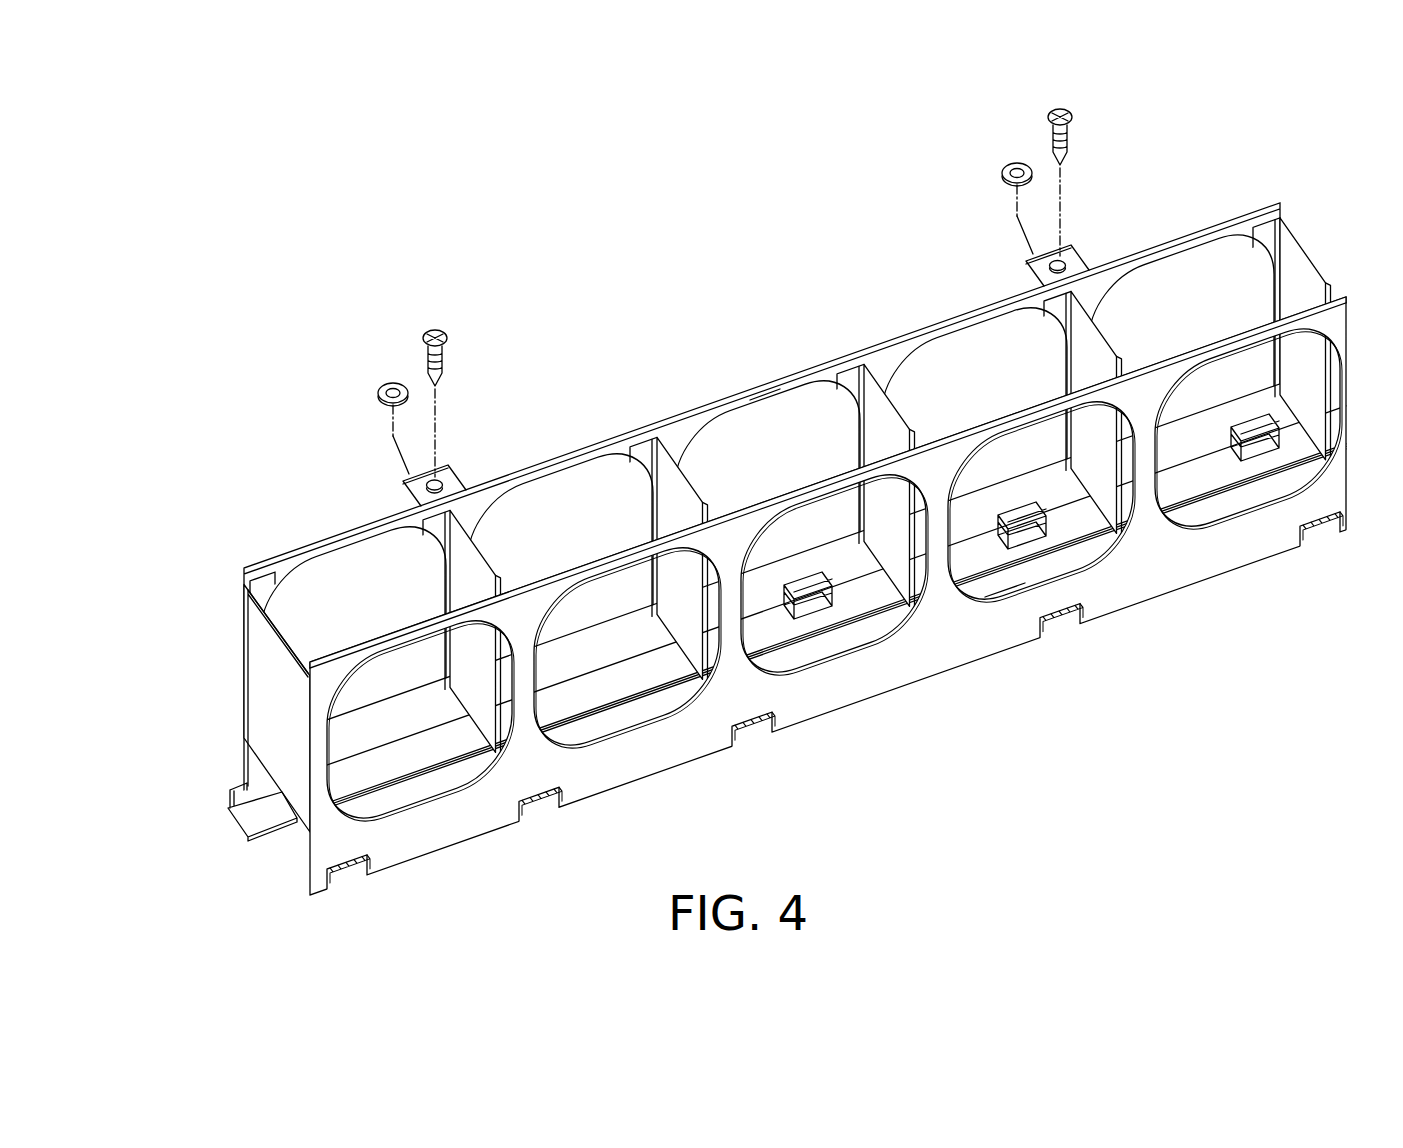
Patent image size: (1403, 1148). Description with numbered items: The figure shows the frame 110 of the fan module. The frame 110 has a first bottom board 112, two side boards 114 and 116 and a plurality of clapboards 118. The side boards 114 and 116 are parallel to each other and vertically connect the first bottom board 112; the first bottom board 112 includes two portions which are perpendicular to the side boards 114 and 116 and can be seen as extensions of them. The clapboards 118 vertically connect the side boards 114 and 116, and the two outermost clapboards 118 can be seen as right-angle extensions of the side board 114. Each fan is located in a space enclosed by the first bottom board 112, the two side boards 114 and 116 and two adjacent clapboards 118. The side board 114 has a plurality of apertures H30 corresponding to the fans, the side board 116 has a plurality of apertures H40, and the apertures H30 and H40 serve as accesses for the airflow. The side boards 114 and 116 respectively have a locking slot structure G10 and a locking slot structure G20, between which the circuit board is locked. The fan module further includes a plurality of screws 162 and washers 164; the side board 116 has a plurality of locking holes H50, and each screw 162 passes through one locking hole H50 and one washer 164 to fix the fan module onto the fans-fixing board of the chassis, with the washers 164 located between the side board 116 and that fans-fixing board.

The frame 110 is at (778, 484).
The first bottom board 112 is at (248, 820).
The side board 114 is at (845, 685).
The side board 116 is at (690, 430).
The clapboard 118 is at (873, 405).
The screw 162 is at (1069, 137).
The washer 164 is at (1003, 168).
The locking slot structure G10 is at (535, 812).
The locking slot structure G20 is at (1028, 541).
The aperture H30 is at (1024, 606).
The aperture H40 is at (772, 384).
The locking hole H50 is at (1074, 255).